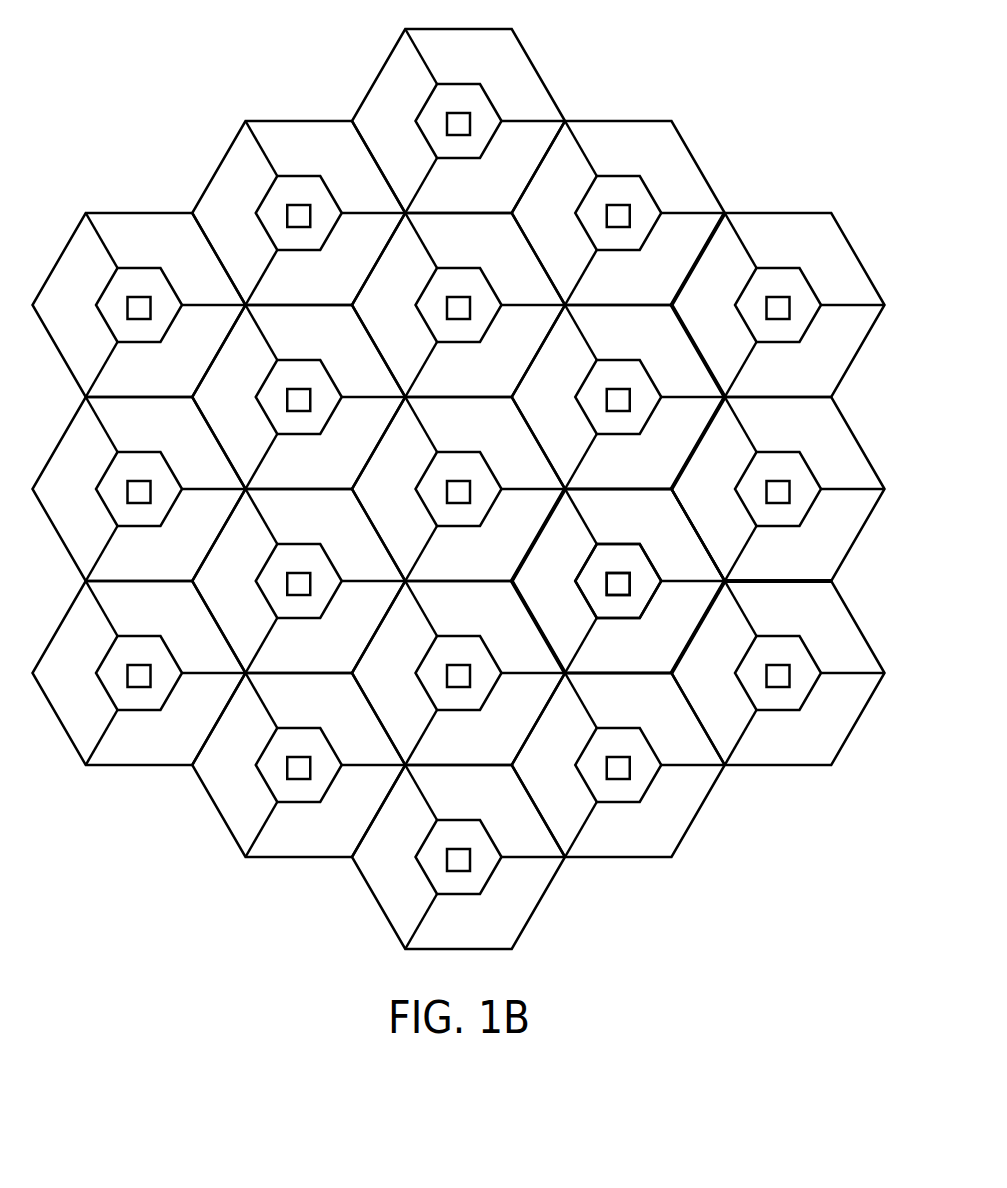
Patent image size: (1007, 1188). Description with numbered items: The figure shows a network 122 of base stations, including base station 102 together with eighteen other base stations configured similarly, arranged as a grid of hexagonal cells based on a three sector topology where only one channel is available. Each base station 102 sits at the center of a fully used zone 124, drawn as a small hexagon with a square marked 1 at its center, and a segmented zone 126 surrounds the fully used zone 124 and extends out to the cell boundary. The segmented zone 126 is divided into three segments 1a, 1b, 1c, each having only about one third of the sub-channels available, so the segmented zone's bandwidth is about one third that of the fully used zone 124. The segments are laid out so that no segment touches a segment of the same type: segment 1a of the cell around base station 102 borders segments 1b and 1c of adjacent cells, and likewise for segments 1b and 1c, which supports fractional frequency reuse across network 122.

The network 122 is at (217, 72).
The base station 102 is at (618, 602).
The fully used zone 124 is at (652, 589).
The segmented zone 126 is at (583, 661).
The base station site 1 is at (458, 489).
The segment 1a is at (457, 424).
The segment 1b is at (524, 527).
The segment 1c is at (406, 529).